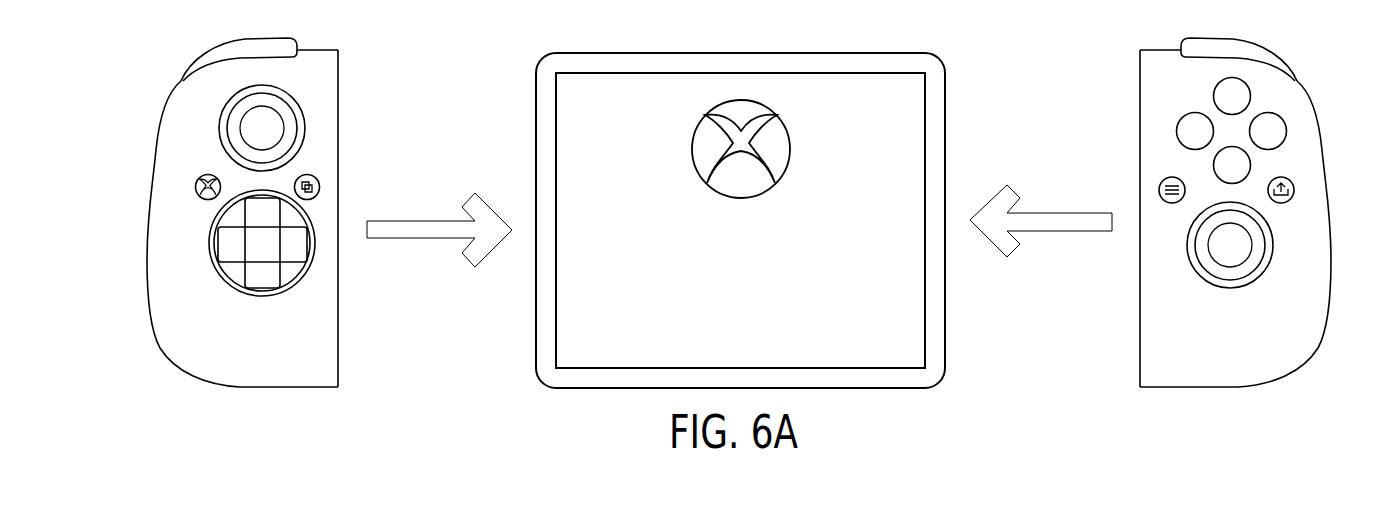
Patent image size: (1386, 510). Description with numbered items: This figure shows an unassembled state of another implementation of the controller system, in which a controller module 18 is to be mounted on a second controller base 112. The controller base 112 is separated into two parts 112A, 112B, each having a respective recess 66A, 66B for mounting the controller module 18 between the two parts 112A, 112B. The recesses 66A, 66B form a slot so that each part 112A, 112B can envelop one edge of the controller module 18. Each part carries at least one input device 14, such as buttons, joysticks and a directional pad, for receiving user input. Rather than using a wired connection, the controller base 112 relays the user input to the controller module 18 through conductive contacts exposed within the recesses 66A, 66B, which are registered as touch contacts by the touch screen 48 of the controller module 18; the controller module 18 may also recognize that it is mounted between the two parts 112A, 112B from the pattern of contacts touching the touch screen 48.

The controller base 112 is at (138, 79).
The first part of controller base 112A is at (155, 185).
The second part of controller base 112B is at (1328, 185).
The recess 66A is at (340, 350).
The recess 66B is at (1140, 350).
The input device 14 is at (293, 97).
The controller module 18 is at (545, 62).
The touch screen 48 is at (587, 103).